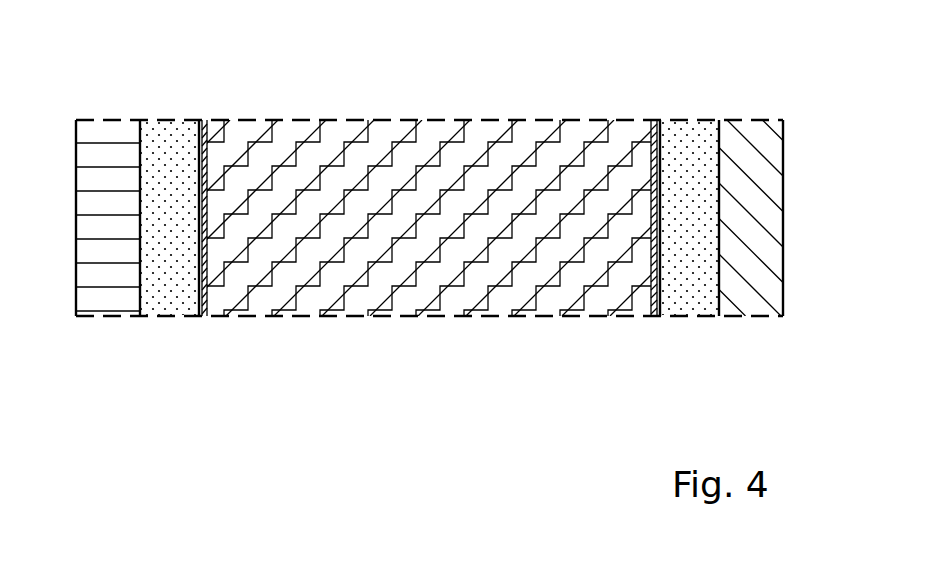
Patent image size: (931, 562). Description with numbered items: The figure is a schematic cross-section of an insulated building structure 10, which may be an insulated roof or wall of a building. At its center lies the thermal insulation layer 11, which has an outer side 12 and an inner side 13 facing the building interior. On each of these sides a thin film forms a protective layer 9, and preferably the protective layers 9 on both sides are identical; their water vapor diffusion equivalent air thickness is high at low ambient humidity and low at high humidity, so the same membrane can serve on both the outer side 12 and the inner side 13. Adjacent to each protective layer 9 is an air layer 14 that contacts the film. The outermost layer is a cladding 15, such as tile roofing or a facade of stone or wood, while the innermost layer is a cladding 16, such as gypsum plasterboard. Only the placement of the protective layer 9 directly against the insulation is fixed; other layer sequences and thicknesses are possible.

The protective layer 9 is at (204, 318).
The insulated building structure 10 is at (421, 259).
The thermal insulation layer 11 is at (396, 138).
The outer side 12 is at (60, 302).
The inner side 13 is at (800, 302).
The air layer 14 is at (168, 131).
The cladding 15 is at (110, 131).
The cladding 16 is at (745, 133).